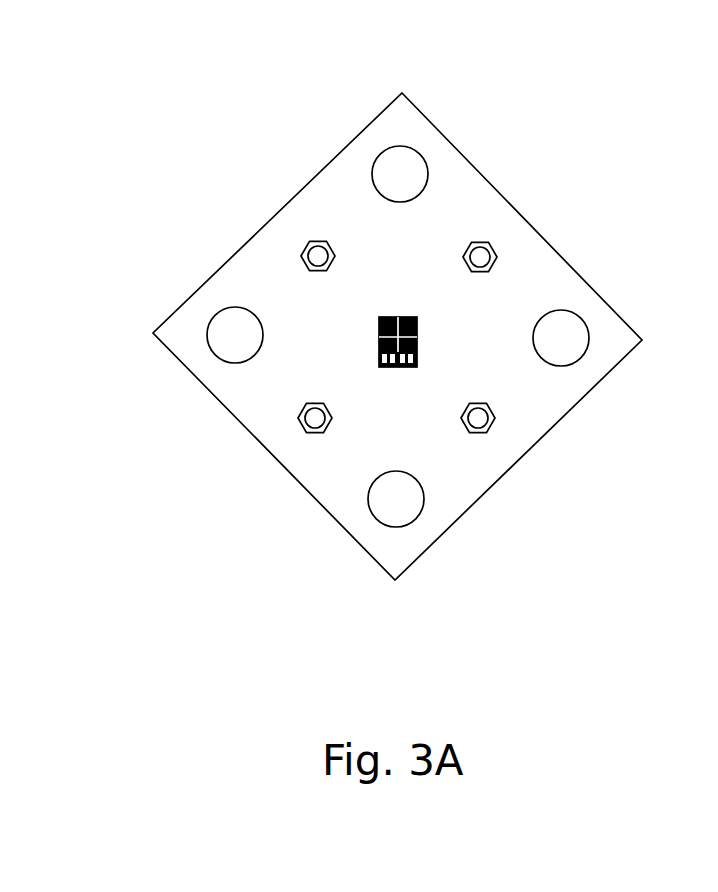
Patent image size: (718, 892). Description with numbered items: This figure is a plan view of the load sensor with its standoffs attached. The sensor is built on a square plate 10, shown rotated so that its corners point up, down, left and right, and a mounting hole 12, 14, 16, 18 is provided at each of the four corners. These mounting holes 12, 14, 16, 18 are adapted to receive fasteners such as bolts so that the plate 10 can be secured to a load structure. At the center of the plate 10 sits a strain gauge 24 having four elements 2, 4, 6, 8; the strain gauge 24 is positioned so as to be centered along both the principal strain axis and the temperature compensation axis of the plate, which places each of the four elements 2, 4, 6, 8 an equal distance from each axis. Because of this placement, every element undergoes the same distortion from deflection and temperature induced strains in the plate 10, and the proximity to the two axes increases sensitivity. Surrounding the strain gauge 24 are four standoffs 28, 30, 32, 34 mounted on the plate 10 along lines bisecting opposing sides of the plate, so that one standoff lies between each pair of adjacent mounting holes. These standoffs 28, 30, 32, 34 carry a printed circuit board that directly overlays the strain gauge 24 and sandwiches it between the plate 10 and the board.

The strain gauge element 2 is at (311, 232).
The strain gauge element 4 is at (487, 236).
The strain gauge element 6 is at (316, 469).
The strain gauge element 8 is at (482, 470).
The square plate 10 is at (397, 332).
The mounting hole 12 is at (449, 122).
The mounting hole 14 is at (182, 285).
The mounting hole 16 is at (443, 556).
The mounting hole 18 is at (625, 300).
The strain gauge 24 is at (522, 276).
The standoff 28 is at (252, 200).
The standoff 30 is at (542, 206).
The standoff 32 is at (250, 471).
The standoff 34 is at (541, 473).